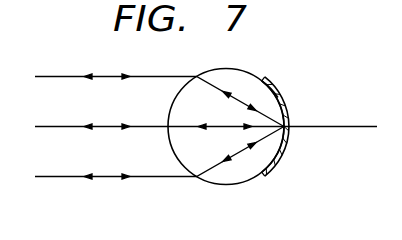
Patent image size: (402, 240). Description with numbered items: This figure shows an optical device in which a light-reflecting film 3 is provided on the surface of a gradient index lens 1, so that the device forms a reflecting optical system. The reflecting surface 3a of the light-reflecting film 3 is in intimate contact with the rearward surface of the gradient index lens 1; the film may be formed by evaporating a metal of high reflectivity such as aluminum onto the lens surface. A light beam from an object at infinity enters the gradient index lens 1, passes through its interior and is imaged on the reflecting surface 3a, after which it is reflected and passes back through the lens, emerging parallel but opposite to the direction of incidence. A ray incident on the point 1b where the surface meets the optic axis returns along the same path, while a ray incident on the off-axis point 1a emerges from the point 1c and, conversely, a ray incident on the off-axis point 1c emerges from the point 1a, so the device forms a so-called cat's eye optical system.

The gradient index lens 1 is at (245, 183).
The off-axis point 1a is at (194, 76).
The point of intersection with the optic axis 1b is at (168, 126).
The off-axis point 1c is at (195, 178).
The light-reflecting film 3 is at (265, 177).
The reflecting surface 3a is at (268, 90).